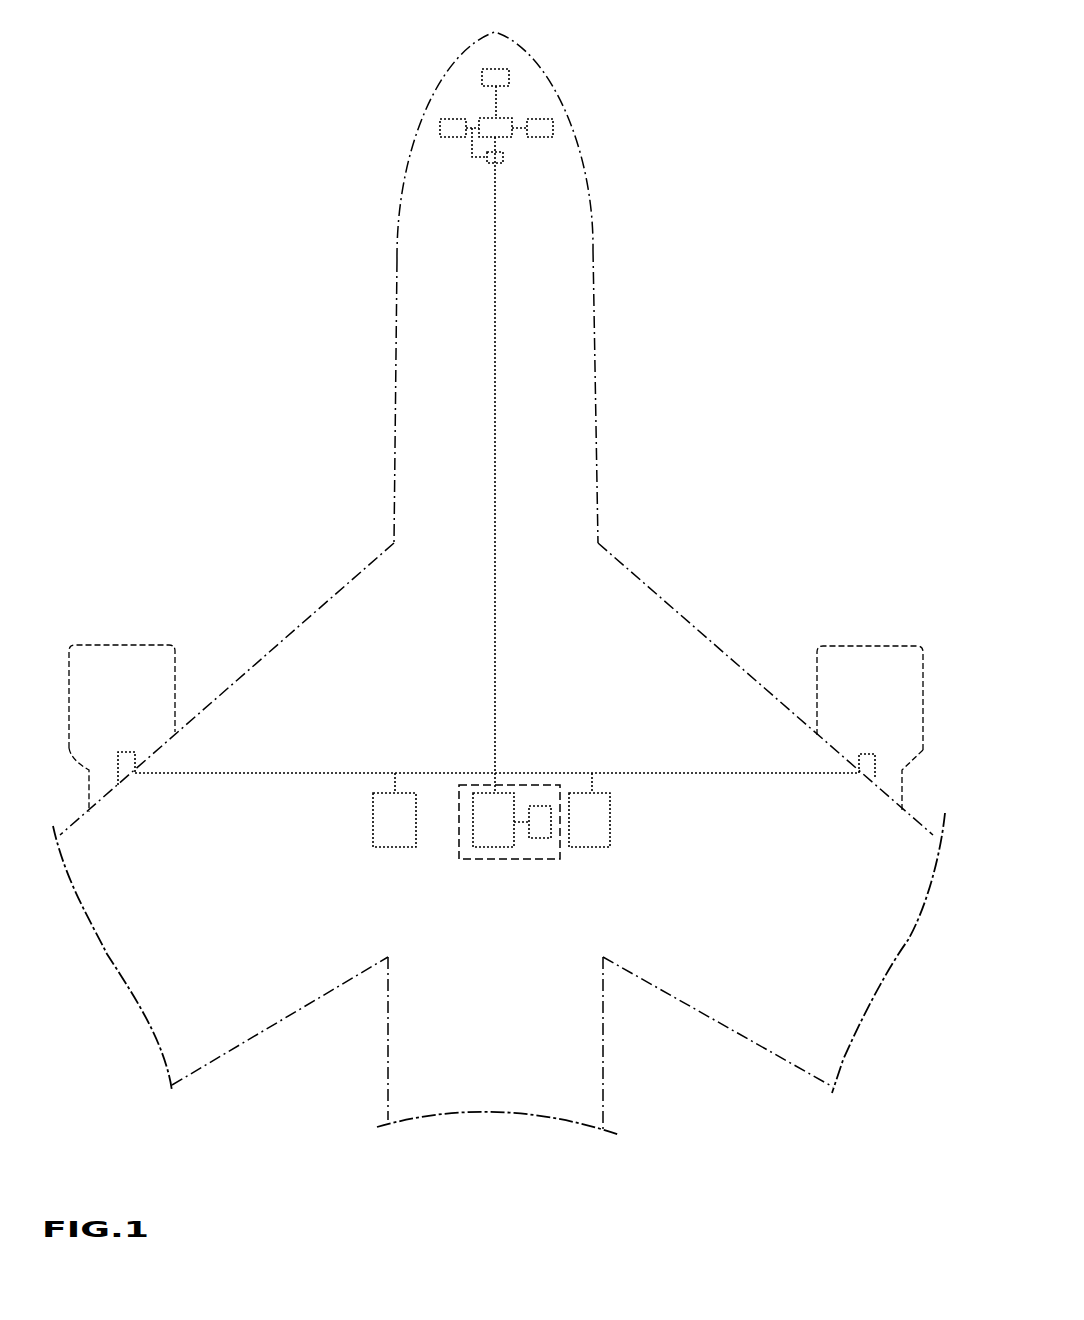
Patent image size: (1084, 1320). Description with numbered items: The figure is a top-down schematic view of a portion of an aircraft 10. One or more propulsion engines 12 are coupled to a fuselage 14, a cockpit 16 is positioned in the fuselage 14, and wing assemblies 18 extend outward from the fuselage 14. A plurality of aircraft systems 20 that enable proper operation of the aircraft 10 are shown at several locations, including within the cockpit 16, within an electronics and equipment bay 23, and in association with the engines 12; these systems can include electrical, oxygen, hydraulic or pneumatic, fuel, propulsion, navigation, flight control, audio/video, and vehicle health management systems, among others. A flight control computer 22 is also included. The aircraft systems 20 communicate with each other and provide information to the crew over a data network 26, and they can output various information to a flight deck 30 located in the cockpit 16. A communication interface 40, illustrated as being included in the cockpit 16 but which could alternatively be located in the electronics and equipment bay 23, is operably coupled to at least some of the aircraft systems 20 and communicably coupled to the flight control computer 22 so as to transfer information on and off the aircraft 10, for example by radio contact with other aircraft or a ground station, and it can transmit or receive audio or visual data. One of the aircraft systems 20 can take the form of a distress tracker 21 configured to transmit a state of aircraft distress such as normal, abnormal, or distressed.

The aircraft 10 is at (252, 116).
The propulsion engine 12 is at (867, 645).
The fuselage 14 is at (603, 378).
The cockpit 16 is at (453, 67).
The wing assembly 18 is at (733, 655).
The aircraft system 20 is at (553, 128).
The distress tracker 21 is at (441, 128).
The flight control computer 22 is at (502, 69).
The electronics and equipment bay 23 is at (478, 859).
The data network 26 is at (496, 235).
The flight deck 30 is at (502, 118).
The communication interface 40 is at (503, 160).